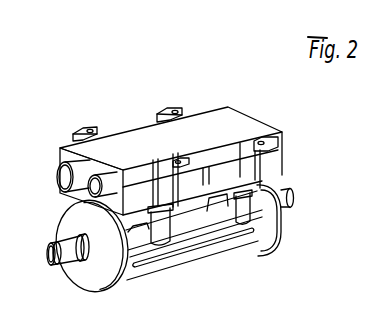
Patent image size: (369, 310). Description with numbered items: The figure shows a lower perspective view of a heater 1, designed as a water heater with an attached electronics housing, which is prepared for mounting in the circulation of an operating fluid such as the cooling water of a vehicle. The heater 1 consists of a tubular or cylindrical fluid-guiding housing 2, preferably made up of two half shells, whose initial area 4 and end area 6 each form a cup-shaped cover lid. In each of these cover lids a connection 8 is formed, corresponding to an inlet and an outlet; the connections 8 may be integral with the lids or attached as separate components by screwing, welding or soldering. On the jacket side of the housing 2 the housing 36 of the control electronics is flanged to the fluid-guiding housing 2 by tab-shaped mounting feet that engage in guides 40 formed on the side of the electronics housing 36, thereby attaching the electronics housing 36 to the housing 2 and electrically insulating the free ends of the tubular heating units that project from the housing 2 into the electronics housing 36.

The heater 1 is at (128, 29).
The housing 2 is at (246, 263).
The initial area 4 is at (76, 279).
The end area 6 is at (283, 222).
The connection 8 is at (49, 255).
The housing of control electronics 36 is at (223, 117).
The guides 40 is at (283, 159).